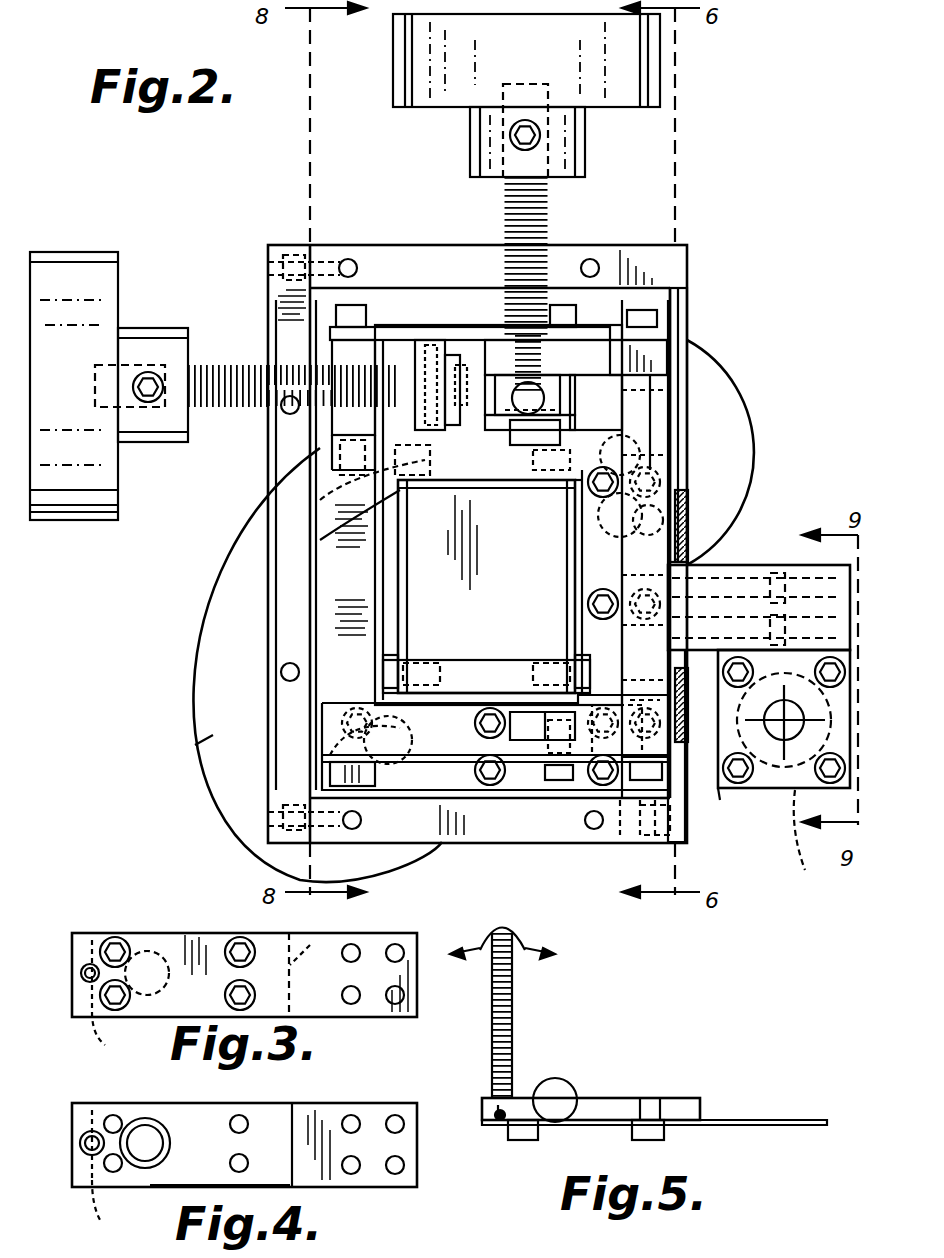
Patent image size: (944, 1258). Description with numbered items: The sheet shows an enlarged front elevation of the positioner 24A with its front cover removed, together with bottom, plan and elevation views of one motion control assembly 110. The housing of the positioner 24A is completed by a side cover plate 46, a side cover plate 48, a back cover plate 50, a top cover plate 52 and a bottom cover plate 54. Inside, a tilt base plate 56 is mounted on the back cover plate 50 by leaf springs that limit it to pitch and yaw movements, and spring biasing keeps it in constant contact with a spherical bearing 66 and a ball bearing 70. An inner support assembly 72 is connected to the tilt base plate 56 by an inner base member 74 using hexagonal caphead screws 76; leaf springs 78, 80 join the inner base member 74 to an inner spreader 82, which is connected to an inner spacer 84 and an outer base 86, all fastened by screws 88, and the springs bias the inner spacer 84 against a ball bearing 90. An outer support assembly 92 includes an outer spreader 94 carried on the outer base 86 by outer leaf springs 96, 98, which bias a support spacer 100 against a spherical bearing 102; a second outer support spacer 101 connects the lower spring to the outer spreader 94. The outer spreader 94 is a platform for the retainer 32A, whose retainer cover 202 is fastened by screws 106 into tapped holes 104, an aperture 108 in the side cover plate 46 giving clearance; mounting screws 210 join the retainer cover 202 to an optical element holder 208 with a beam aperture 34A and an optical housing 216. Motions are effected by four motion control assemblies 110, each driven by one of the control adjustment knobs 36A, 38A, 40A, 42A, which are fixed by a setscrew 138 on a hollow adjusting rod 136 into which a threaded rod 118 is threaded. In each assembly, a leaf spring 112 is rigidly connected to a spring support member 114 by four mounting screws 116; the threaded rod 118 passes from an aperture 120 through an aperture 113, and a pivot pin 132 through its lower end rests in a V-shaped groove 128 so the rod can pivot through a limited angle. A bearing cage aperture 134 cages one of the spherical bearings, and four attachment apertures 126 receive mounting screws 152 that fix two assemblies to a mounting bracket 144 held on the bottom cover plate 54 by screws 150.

In FIG. 2, the positioner 24A is at (712, 268).
In FIG. 2, the retainer 32A is at (792, 552).
In FIG. 2, the aperture 34A is at (780, 700).
In FIG. 2, the control adjustment knob 36A is at (60, 520).
In FIG. 2, the control adjustment knob 38A is at (398, 78).
In FIG. 2, the adjustment control knob 40A is at (225, 800).
In FIG. 2, the adjustment control knob 42A is at (750, 462).
In FIG. 2, the side cover plate 46 is at (685, 305).
In FIG. 2, the side cover plate 48 is at (285, 625).
In FIG. 2, the back cover plate 50 is at (320, 588).
In FIG. 2, the top cover plate 52 is at (660, 250).
In FIG. 2, the bottom cover plate 54 is at (455, 843).
In FIG. 2, the tilt base plate 56 is at (455, 597).
In FIG. 2, the spherical bearing 66 is at (688, 494).
In FIG. 4, the spherical bearing 66 is at (140, 1130).
In FIG. 5, the spherical bearing 66 is at (555, 1080).
In FIG. 2, the ball bearing 70 is at (385, 780).
In FIG. 2, the inner support assembly 72 is at (390, 562).
In FIG. 2, the inner base member 74 is at (505, 660).
In FIG. 2, the hexagonal caphead screws 76 is at (395, 660).
In FIG. 2, the leaf spring 78 is at (408, 584).
In FIG. 2, the leaf spring 80 is at (575, 545).
In FIG. 2, the inner spreader 82 is at (520, 480).
In FIG. 2, the inner spacer 84 is at (380, 420).
In FIG. 2, the outer base 86 is at (320, 540).
In FIG. 2, the screws 88 is at (320, 500).
In FIG. 2, the ball bearing 90 is at (410, 395).
In FIG. 2, the outer support assembly 92 is at (696, 368).
In FIG. 2, the outer spreader 94 is at (668, 415).
In FIG. 2, the outer leaf spring 96 is at (455, 325).
In FIG. 2, the outer leaf spring 98 is at (518, 778).
In FIG. 2, the support spacer 100 is at (655, 345).
In FIG. 2, the second outer support spacer 101 is at (655, 750).
In FIG. 2, the spherical bearing 102 is at (560, 400).
In FIG. 2, the tapped holes 104 is at (645, 611).
In FIG. 2, the screws 106 is at (790, 610).
In FIG. 2, the aperture 108 is at (672, 562).
In FIG. 2, the motion control assembly 110 is at (565, 372).
In FIG. 3, the motion control assembly 110 is at (191, 920).
In FIG. 4, the motion control assembly 110 is at (382, 1208).
In FIG. 5, the motion control assembly 110 is at (556, 1058).
In FIG. 2, the leaf spring 112 is at (445, 345).
In FIG. 3, the leaf spring 112 is at (410, 980).
In FIG. 4, the leaf spring 112 is at (410, 1185).
In FIG. 5, the leaf spring 112 is at (760, 1120).
In FIG. 4, the aperture 113 is at (85, 1155).
In FIG. 5, the aperture 113 is at (492, 1095).
In FIG. 3, the spring support member 114 is at (314, 930).
In FIG. 4, the spring support member 114 is at (180, 1190).
In FIG. 5, the spring support member 114 is at (700, 1100).
In FIG. 2, the mounting screws 116 is at (470, 395).
In FIG. 3, the mounting screws 116 is at (125, 990).
In FIG. 4, the mounting screws 116 is at (250, 1140).
In FIG. 5, the mounting screws 116 is at (632, 1130).
In FIG. 2, the threaded rod 118 is at (560, 360).
In FIG. 3, the threaded rod 118 is at (85, 985).
In FIG. 4, the threaded rod 118 is at (80, 1143).
In FIG. 5, the threaded rod 118 is at (512, 990).
In FIG. 3, the aperture 120 is at (85, 965).
In FIG. 3, the attachment apertures 126 is at (392, 993).
In FIG. 4, the attachment apertures 126 is at (392, 1160).
In FIG. 3, the V-shaped groove 128 is at (119, 1033).
In FIG. 4, the V-shaped groove 128 is at (74, 1210).
In FIG. 5, the V-shaped groove 128 is at (498, 1122).
In FIG. 3, the pivot pin 132 is at (95, 935).
In FIG. 4, the pivot pin 132 is at (92, 1103).
In FIG. 5, the pivot pin 132 is at (505, 1125).
In FIG. 2, the bearing cage aperture 134 is at (442, 340).
In FIG. 3, the bearing cage aperture 134 is at (160, 980).
In FIG. 4, the bearing cage aperture 134 is at (170, 1146).
In FIG. 5, the bearing cage aperture 134 is at (580, 1090).
In FIG. 2, the adjusting rod 136 is at (548, 222).
In FIG. 2, the setscrew 138 is at (540, 135).
In FIG. 2, the mounting bracket 144 is at (660, 800).
In FIG. 2, the screws 150 is at (632, 842).
In FIG. 2, the mounting screws 152 is at (649, 685).
In FIG. 2, the retainer cover 202 is at (720, 568).
In FIG. 2, the optical element holder 208 is at (790, 788).
In FIG. 2, the mounting screws 210 is at (745, 785).
In FIG. 2, the optical housing 216 is at (822, 838).